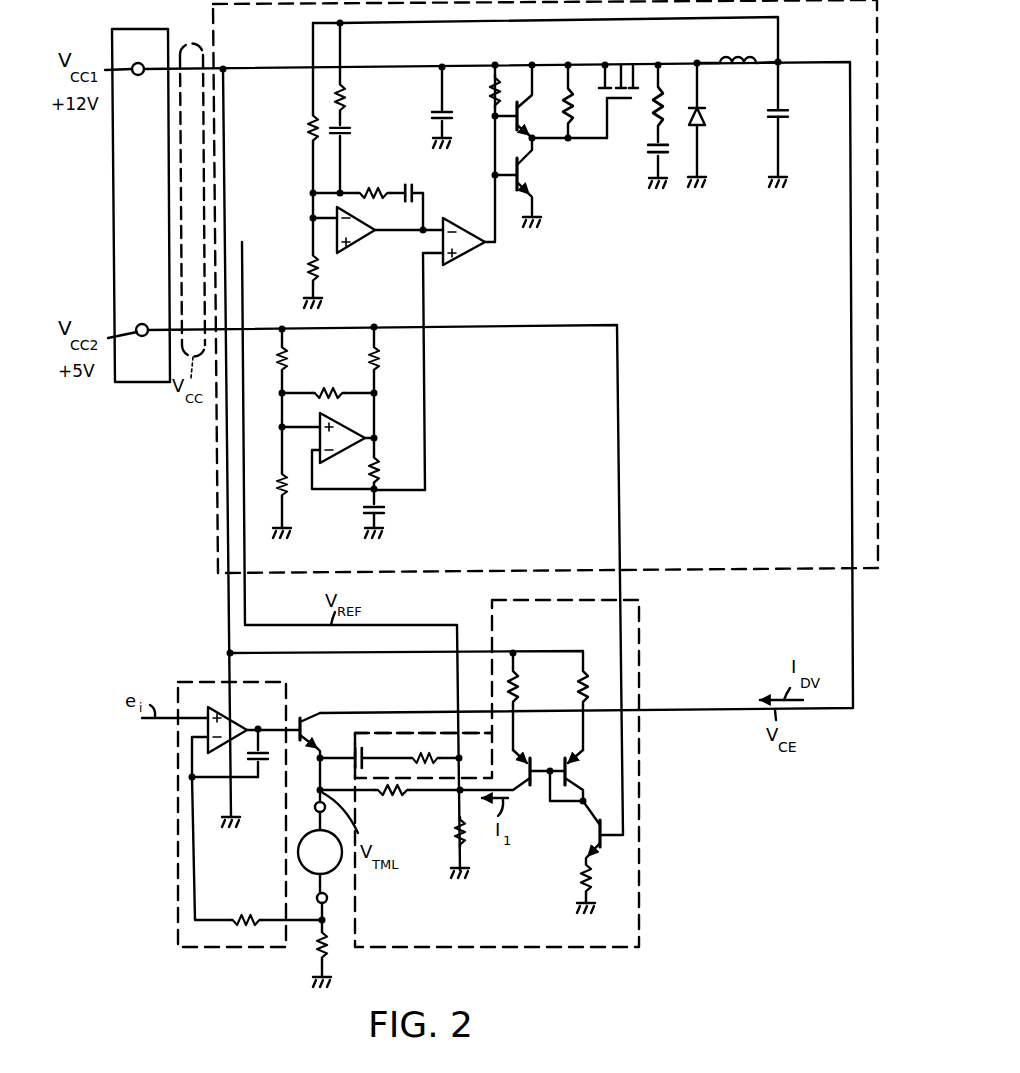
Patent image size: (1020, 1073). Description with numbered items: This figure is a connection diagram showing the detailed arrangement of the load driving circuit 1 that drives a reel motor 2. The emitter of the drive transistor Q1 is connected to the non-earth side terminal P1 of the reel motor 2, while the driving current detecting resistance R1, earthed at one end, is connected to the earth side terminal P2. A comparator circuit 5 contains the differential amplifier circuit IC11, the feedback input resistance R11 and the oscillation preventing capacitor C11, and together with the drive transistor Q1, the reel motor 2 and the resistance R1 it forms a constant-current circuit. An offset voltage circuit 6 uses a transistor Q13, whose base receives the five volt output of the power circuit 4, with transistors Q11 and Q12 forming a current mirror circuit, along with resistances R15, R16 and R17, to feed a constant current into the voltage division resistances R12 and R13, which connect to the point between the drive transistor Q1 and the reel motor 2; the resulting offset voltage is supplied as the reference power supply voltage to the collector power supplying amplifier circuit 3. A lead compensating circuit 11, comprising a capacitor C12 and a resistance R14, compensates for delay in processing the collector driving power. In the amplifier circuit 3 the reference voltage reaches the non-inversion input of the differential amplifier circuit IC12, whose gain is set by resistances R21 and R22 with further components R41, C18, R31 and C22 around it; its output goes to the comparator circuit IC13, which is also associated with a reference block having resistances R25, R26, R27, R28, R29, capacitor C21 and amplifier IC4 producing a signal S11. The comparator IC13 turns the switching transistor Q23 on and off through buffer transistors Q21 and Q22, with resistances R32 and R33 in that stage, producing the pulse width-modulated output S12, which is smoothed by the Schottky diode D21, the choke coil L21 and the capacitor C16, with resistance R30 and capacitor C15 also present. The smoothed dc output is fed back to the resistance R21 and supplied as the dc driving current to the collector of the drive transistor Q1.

The load driving circuit 1 is at (742, 833).
The reel motor 2 is at (329, 872).
The collector power supplying amplifier circuit 3 is at (677, 572).
The power circuit 4 is at (128, 384).
The comparator circuit 5 is at (183, 682).
The offset voltage circuit 6 is at (641, 893).
The lead compensating circuit 11 is at (355, 733).
The gain setting resistance R21 is at (310, 115).
The resistor R41 is at (345, 93).
The capacitor C18 is at (350, 135).
The resistor R31 is at (373, 178).
The capacitor C22 is at (429, 198).
The gain setting resistance R22 is at (310, 265).
The differential amplifier circuit IC12 is at (371, 239).
The comparator circuit IC13 is at (473, 253).
The resistor R32 is at (492, 90).
The buffer transistor Q21 is at (533, 90).
The buffer transistor Q22 is at (527, 178).
The resistor R33 is at (568, 107).
The switching transistor Q23 is at (619, 100).
The pulse width-modulated output S12 is at (635, 63).
The resistor R30 is at (671, 125).
The capacitor C15 is at (652, 150).
The Schottky diode D21 is at (706, 126).
The choke coil L21 is at (738, 69).
The capacitor C16 is at (784, 120).
The resistor R25 is at (287, 361).
The resistor R26 is at (290, 499).
The resistor R27 is at (328, 380).
The operational amplifier IC4 is at (350, 424).
The signal line S11 is at (424, 378).
The resistor R28 is at (380, 361).
The resistor R29 is at (393, 472).
The capacitor C21 is at (386, 515).
The differential amplifier circuit IC11 is at (240, 722).
The oscillation preventing capacitor C11 is at (266, 765).
The feedback input resistance R11 is at (246, 915).
The drive transistor Q1 is at (322, 757).
The non-earth side terminal P1 is at (314, 803).
The earth side terminal P2 is at (317, 898).
The driving current detecting resistance R1 is at (330, 946).
The capacitor C12 is at (365, 754).
The resistance R14 is at (436, 751).
The voltage division resistance R12 is at (392, 804).
The voltage division resistance R13 is at (441, 847).
The resistor R15 is at (518, 685).
The resistor R16 is at (590, 683).
The transistor Q11 is at (532, 763).
The transistor Q12 is at (572, 762).
The transistor Q13 is at (598, 836).
The resistor R17 is at (590, 876).